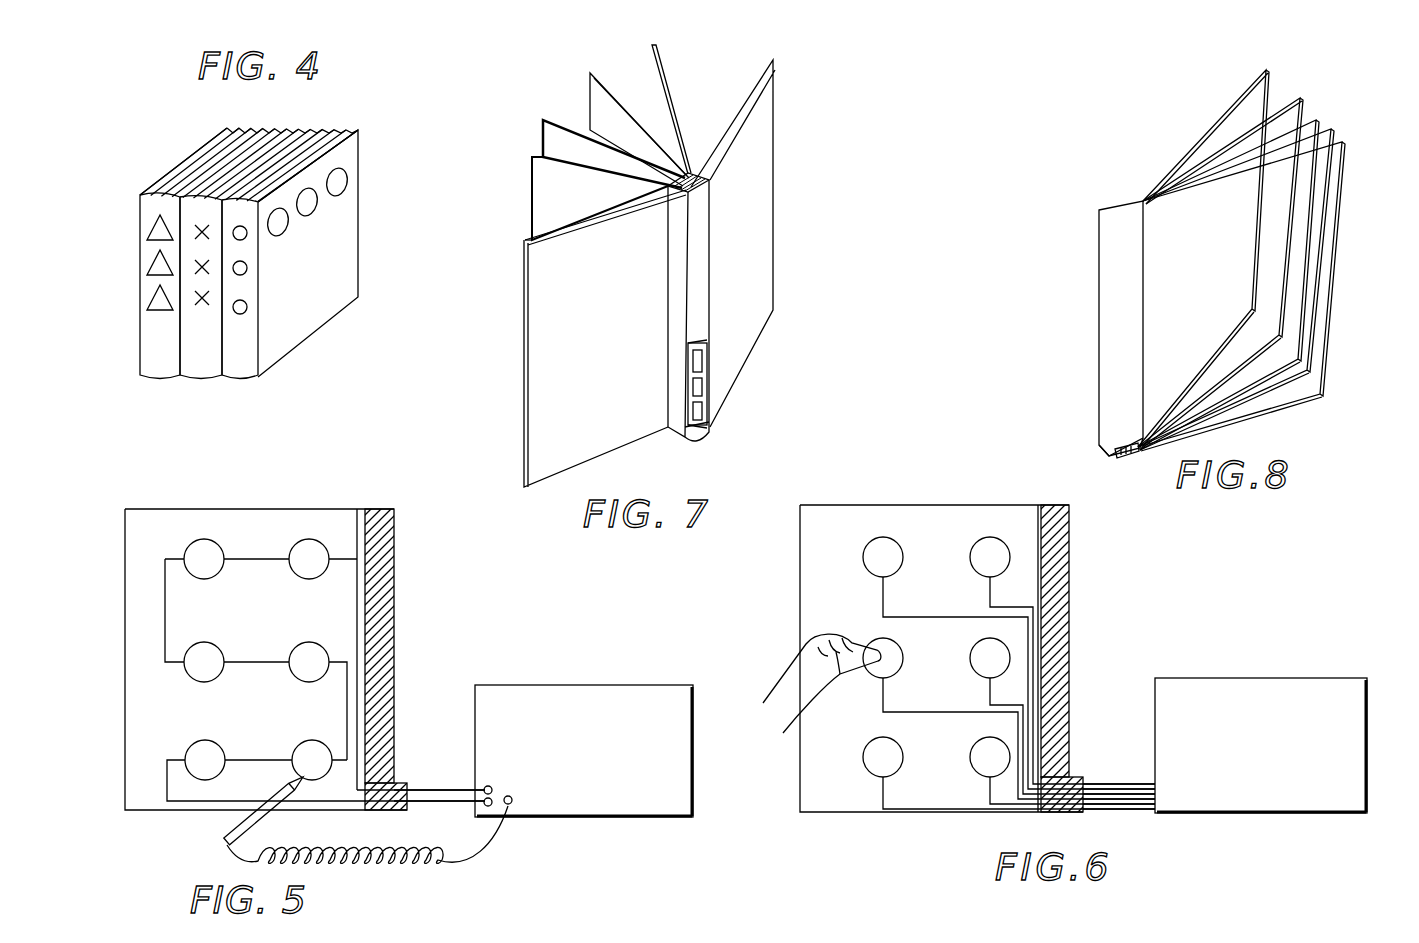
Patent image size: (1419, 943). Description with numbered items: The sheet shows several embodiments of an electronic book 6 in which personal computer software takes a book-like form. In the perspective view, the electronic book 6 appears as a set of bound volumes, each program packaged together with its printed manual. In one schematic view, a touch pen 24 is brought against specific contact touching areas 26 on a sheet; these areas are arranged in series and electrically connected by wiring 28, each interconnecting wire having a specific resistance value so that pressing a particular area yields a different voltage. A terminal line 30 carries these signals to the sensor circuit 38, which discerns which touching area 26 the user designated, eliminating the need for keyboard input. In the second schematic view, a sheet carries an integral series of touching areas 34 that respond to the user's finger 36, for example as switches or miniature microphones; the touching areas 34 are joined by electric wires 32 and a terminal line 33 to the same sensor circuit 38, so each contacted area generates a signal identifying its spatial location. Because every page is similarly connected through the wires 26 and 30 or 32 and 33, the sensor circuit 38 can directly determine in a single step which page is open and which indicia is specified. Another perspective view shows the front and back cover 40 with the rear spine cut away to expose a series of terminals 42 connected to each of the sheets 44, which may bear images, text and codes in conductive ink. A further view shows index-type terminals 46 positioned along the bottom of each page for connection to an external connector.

In FIG. 4, the electronic book 6 is at (390, 193).
In FIG. 7, the electronic book 6 is at (702, 134).
In FIG. 8, the electronic book 6 is at (1136, 192).
In FIG. 5, the electronic book 6 is at (171, 506).
In FIG. 6, the electronic book 6 is at (941, 658).
In FIG. 5, the touch pen 24 is at (258, 820).
In FIG. 5, the contact touching areas 26 is at (216, 546).
In FIG. 5, the wiring 28 is at (243, 662).
In FIG. 5, the terminal line 30 is at (440, 801).
In FIG. 6, the electric wires 32 is at (960, 617).
In FIG. 6, the terminal line 33 is at (1120, 783).
In FIG. 6, the touching areas 34 is at (968, 558).
In FIG. 6, the user's finger 36 is at (790, 676).
In FIG. 5, the sensor circuit 38 is at (580, 685).
In FIG. 6, the sensor circuit 38 is at (1257, 678).
In FIG. 7, the front and back cover 40 is at (773, 225).
In FIG. 7, the terminals 42 is at (713, 403).
In FIG. 7, the sheets 44 is at (548, 121).
In FIG. 8, the sheets 44 is at (1259, 80).
In FIG. 8, the index-type terminals 46 is at (1134, 452).